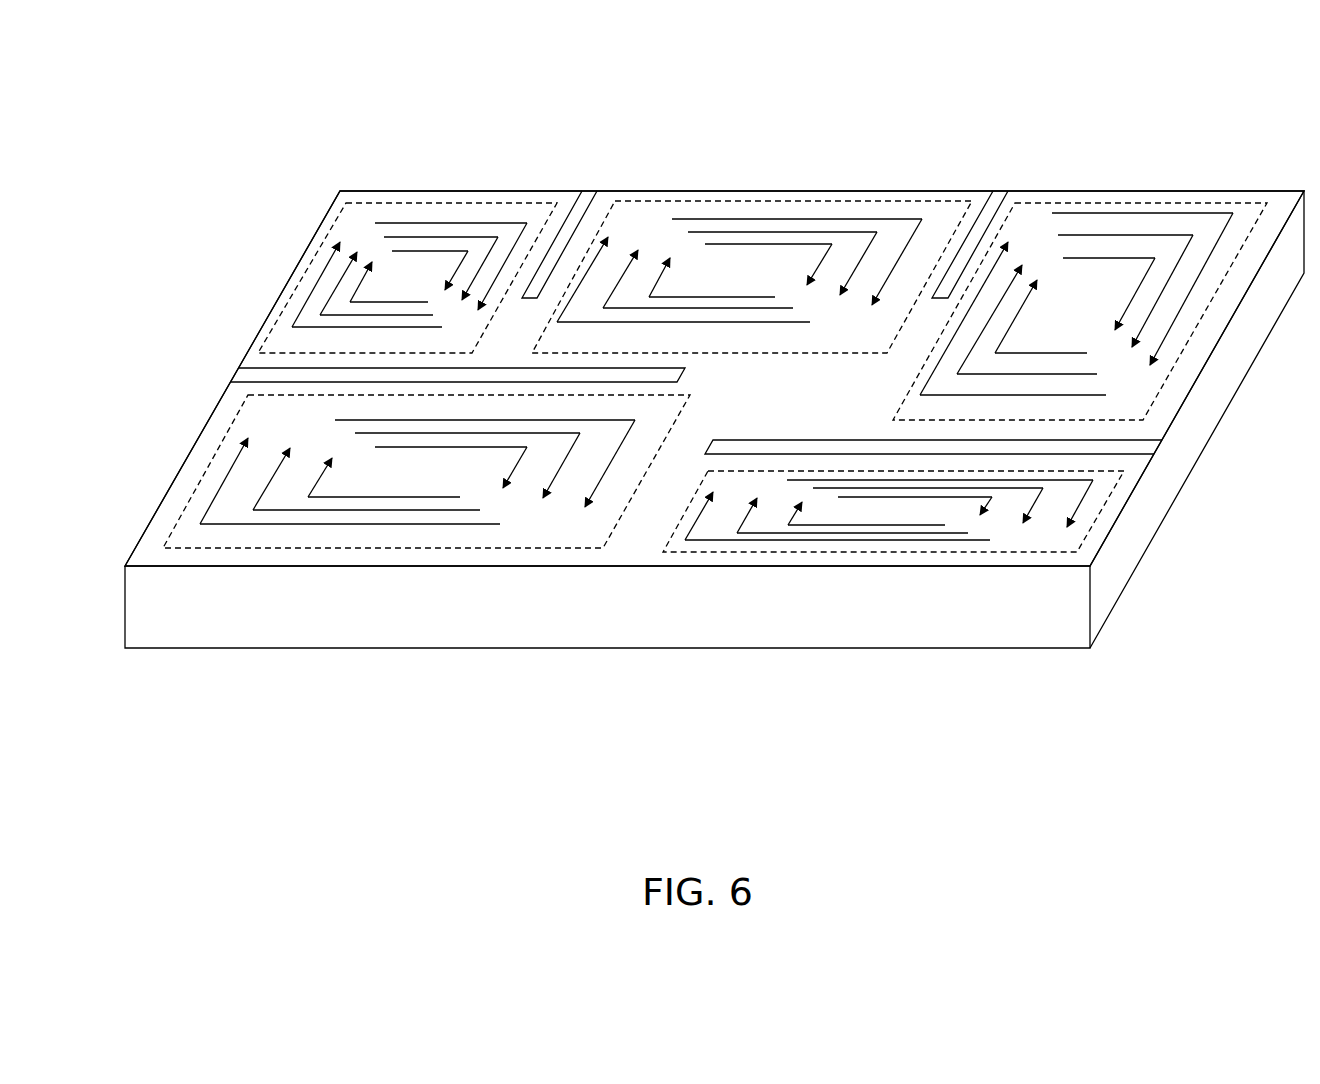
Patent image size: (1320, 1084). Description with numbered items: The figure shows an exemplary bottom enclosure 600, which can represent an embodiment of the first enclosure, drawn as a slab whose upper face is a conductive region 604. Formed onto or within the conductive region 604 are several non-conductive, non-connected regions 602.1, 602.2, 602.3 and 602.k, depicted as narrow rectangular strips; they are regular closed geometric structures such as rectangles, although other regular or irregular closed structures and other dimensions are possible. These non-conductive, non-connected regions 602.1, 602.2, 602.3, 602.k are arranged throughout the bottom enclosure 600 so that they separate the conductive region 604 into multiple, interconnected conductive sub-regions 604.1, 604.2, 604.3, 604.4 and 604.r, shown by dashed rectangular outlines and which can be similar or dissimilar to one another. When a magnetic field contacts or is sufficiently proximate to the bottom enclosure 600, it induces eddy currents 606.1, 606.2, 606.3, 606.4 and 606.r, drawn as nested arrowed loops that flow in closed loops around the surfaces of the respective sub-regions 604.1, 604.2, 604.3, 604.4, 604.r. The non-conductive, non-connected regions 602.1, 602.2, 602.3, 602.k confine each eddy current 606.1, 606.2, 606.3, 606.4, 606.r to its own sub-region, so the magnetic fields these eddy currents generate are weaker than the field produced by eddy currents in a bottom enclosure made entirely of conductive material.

The bottom enclosure 600 is at (1248, 160).
The conductive region 604 is at (804, 397).
The non-conductive, non-connected region 602.1 is at (585, 188).
The non-conductive, non-connected region 602.2 is at (998, 188).
The non-conductive, non-connected region 602.3 is at (1162, 447).
The non-conductive, non-connected region 602.k is at (232, 370).
The conductive sub-region 604.1 is at (430, 200).
The conductive sub-region 604.2 is at (766, 200).
The conductive sub-region 604.3 is at (1124, 201).
The conductive sub-region 604.r is at (323, 550).
The conductive sub-region 604.4 is at (888, 552).
The eddy current 606.1 is at (437, 284).
The eddy current 606.2 is at (772, 279).
The eddy current 606.3 is at (1114, 314).
The eddy current 606.r is at (434, 482).
The eddy current 606.4 is at (914, 519).